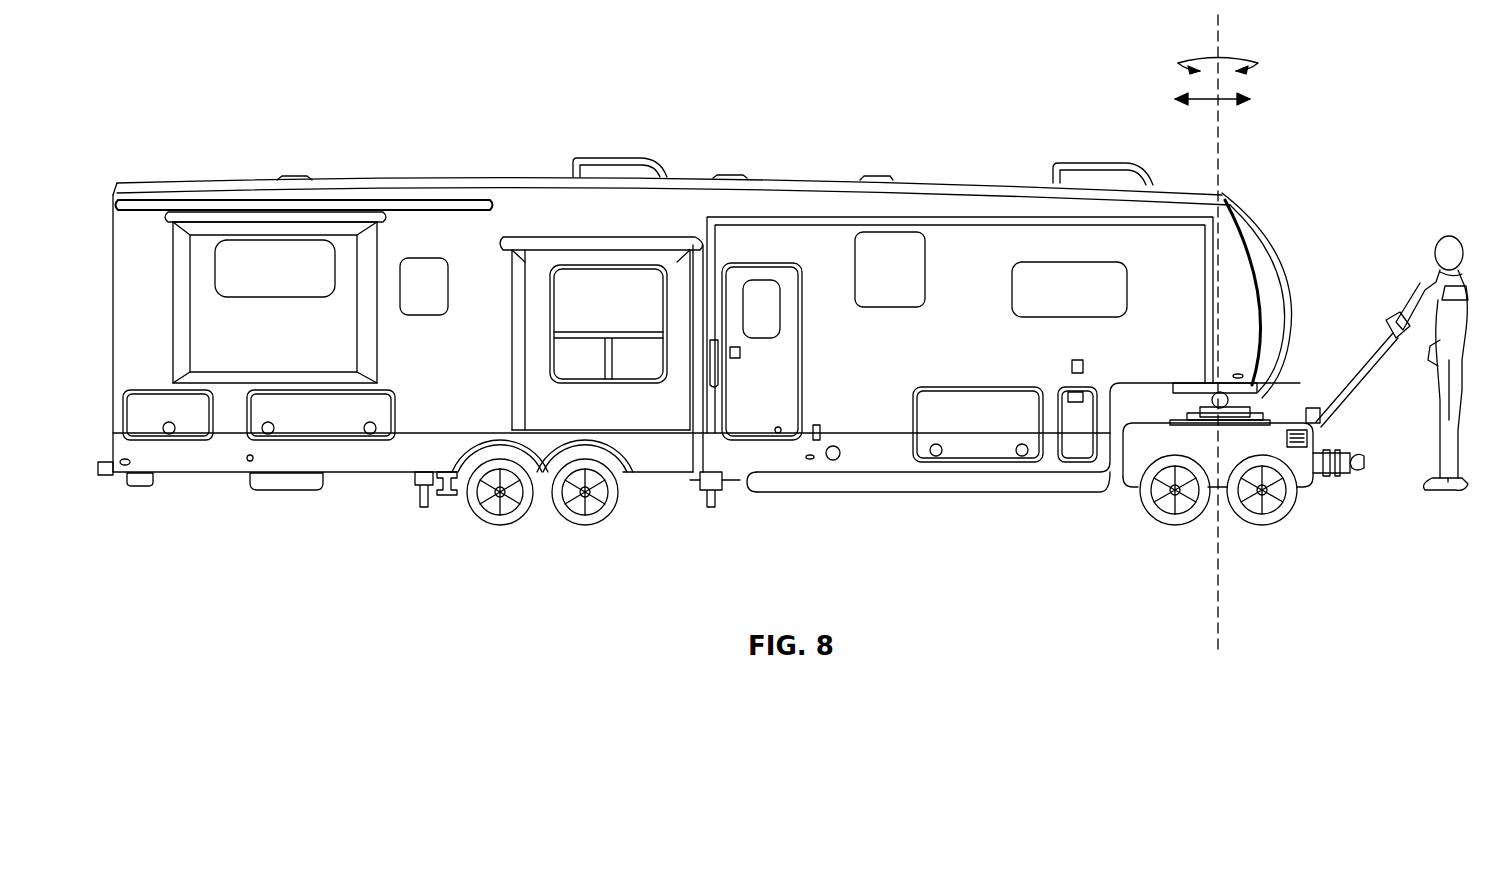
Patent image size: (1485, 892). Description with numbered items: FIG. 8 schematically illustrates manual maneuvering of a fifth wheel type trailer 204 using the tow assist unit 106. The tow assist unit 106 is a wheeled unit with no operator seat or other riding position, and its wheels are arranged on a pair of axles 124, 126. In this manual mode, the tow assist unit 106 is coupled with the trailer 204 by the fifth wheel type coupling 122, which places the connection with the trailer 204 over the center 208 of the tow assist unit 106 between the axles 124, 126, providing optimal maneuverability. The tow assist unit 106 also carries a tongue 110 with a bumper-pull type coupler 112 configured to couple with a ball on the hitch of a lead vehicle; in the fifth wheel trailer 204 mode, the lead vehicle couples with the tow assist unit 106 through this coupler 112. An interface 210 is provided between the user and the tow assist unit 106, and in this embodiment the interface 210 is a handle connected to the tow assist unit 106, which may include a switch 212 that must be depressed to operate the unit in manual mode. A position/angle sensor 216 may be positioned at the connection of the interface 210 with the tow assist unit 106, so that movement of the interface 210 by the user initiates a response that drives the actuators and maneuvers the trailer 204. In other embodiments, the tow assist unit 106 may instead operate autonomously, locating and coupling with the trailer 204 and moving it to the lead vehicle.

The fifth wheel type trailer 204 is at (778, 185).
The fifth wheel type coupling 122 is at (1200, 382).
The tow assist unit 106 is at (1130, 458).
The axle 124 is at (1180, 510).
The axle 126 is at (1265, 508).
The tongue 110 is at (1330, 475).
The coupler 112 is at (1355, 472).
The interface 210 is at (1378, 338).
The position/angle sensor 216 is at (1314, 406).
The switch 212 is at (1397, 345).
The center 208 is at (1221, 600).